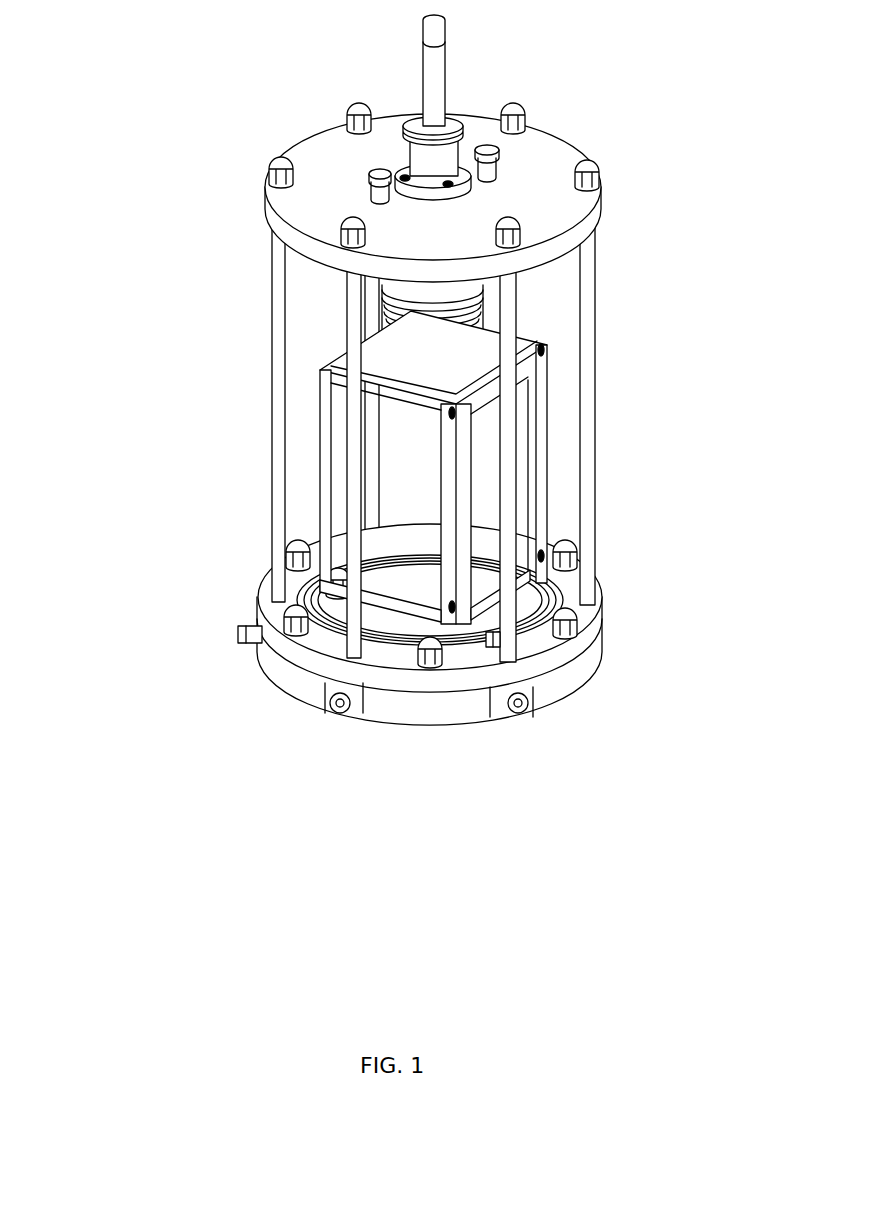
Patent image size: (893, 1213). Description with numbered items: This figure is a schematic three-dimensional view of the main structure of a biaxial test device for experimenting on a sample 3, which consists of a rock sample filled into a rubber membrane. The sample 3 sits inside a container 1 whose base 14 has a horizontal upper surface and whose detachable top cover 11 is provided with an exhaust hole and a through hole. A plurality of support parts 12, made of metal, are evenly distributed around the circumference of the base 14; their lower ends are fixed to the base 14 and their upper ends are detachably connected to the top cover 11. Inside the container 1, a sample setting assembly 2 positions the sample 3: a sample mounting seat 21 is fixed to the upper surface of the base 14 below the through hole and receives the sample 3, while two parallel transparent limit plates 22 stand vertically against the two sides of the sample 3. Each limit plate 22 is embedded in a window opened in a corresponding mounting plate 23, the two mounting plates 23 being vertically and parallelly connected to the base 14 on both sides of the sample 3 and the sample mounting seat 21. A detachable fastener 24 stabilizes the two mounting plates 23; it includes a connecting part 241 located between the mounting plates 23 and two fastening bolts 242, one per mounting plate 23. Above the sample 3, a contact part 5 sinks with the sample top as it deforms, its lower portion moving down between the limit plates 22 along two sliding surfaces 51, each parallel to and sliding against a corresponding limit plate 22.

The container 1 is at (697, 235).
The top cover 11 is at (581, 235).
The support part 12 is at (372, 422).
The base 14 is at (563, 682).
The sample setting assembly 2 is at (52, 458).
The sample mounting seat 21 is at (155, 852).
The limit plate 22 is at (233, 852).
The mounting plate 23 is at (323, 852).
The fastener 24 is at (163, 460).
The connecting part 241 is at (397, 398).
The fastening bolt 242 is at (450, 415).
The sample 3 is at (403, 516).
The contact part 5 is at (284, 295).
The sliding surface 51 is at (410, 363).